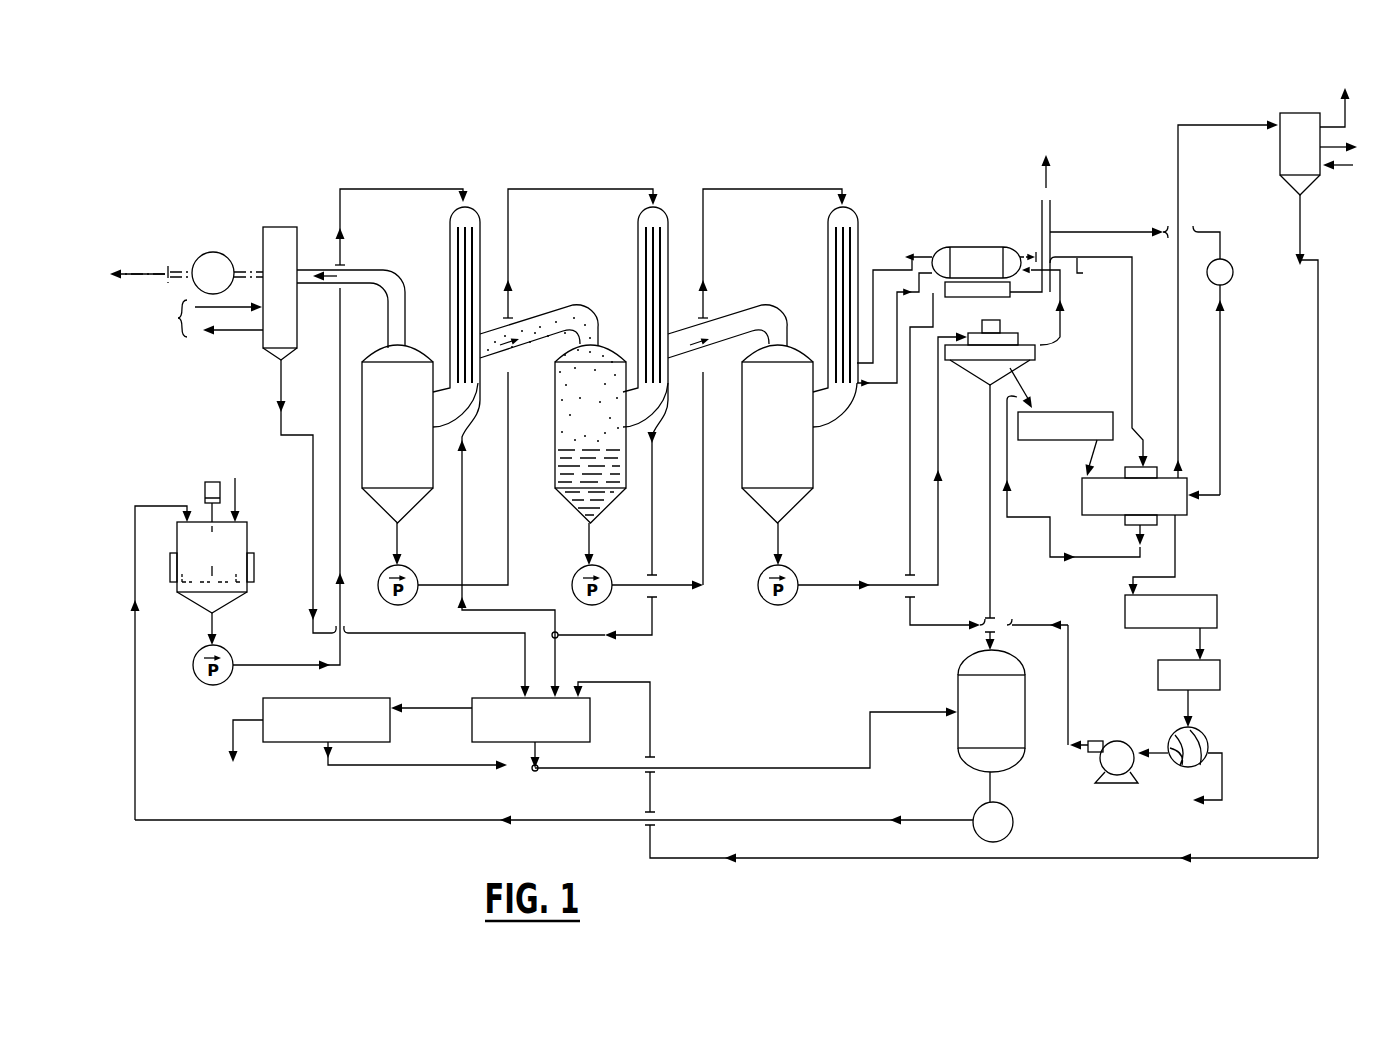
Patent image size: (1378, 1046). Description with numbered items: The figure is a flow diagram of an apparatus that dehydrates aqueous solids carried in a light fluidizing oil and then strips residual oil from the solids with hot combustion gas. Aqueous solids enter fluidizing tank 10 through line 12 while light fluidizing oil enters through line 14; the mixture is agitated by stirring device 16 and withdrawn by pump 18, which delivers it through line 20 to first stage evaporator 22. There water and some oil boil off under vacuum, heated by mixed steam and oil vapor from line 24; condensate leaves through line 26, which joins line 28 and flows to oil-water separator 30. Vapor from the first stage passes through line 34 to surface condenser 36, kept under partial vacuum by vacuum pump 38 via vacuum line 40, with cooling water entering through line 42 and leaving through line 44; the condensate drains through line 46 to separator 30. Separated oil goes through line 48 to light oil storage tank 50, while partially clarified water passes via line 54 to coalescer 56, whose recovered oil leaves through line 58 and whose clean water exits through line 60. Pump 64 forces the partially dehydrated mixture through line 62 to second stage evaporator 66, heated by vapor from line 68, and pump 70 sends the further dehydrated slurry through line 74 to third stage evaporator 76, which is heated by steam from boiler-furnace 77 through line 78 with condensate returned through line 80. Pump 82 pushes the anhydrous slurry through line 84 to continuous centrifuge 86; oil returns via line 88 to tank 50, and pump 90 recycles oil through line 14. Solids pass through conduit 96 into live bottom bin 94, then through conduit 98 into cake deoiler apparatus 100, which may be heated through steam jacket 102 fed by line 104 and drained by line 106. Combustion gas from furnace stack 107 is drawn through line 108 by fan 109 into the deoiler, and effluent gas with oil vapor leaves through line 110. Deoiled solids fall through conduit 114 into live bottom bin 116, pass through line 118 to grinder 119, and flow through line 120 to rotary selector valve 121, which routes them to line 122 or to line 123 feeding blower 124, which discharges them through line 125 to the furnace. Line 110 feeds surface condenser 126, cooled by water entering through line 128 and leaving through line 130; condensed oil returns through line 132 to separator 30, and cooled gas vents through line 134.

The fluidizing tank 10 is at (248, 523).
The line 12 is at (238, 488).
The line 14 is at (135, 563).
The stirring device 16 is at (233, 600).
The pump 18 is at (200, 647).
The line 20 is at (373, 188).
The first stage evaporator 22 is at (447, 283).
The line 24 is at (537, 317).
The line 26 is at (462, 475).
The line 28 is at (652, 450).
The oil-water separator 30 is at (590, 727).
The line 34 is at (357, 270).
The surface condenser 36 is at (297, 227).
The vacuum pump 38 is at (195, 236).
The vacuum line 40 is at (248, 268).
The line 42 is at (213, 307).
The line 44 is at (238, 330).
The line 46 is at (280, 388).
The line 48 is at (930, 708).
The light oil storage tank 50 is at (960, 668).
The line 54 is at (410, 683).
The coalescer 56 is at (333, 698).
The line 58 is at (398, 765).
The line 60 is at (233, 733).
The line 62 is at (598, 185).
The pump 64 is at (403, 603).
The second stage evaporator 66 is at (635, 285).
The line 68 is at (738, 317).
The pump 70 is at (592, 608).
The line 74 is at (787, 185).
The third stage evaporator 76 is at (825, 285).
The boiler-furnace 77 is at (957, 237).
The line 78 is at (873, 270).
The line 80 is at (897, 322).
The pump 82 is at (763, 598).
The line 84 is at (822, 582).
The continuous centrifuge 86 is at (1018, 336).
The line 88 is at (998, 613).
The pump 90 is at (985, 835).
The live bottom bin 94 is at (1072, 410).
The conduit 96 is at (1020, 385).
The conduit 98 is at (1088, 465).
The cake deoiler apparatus 100 is at (1082, 498).
The steam jacket 102 is at (1123, 522).
The line 104 is at (1143, 427).
The line 106 is at (1008, 463).
The furnace stack 107 is at (1042, 222).
The line 108 is at (1108, 230).
The fan 109 is at (1233, 268).
The line 110 is at (1178, 158).
The conduit 114 is at (1178, 542).
The live bottom bin 116 is at (1180, 593).
The line 118 is at (1203, 643).
The grinder 119 is at (1158, 680).
The line 120 is at (1198, 705).
The rotary selector valve 121 is at (1185, 768).
The line 122 is at (1223, 763).
The line 123 is at (1153, 753).
The blower 124 is at (1097, 778).
The line 125 is at (938, 292).
The surface condenser 126 is at (1280, 113).
The line 128 is at (1340, 165).
The line 130 is at (1335, 150).
The line 132 is at (650, 682).
The line 134 is at (1345, 95).